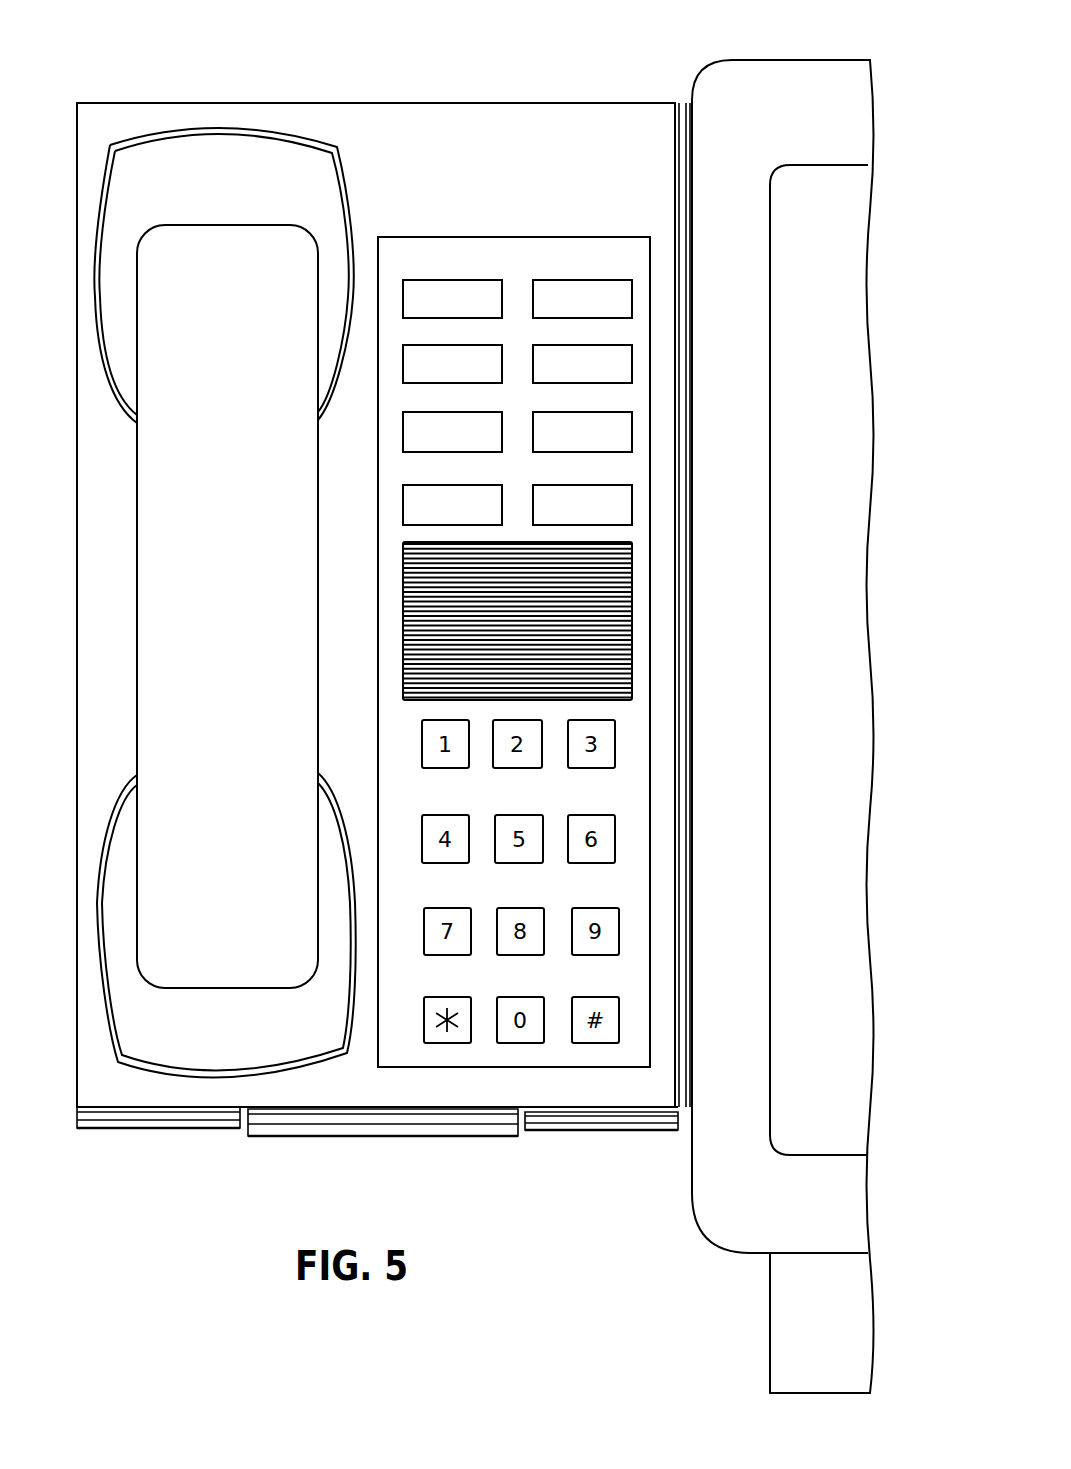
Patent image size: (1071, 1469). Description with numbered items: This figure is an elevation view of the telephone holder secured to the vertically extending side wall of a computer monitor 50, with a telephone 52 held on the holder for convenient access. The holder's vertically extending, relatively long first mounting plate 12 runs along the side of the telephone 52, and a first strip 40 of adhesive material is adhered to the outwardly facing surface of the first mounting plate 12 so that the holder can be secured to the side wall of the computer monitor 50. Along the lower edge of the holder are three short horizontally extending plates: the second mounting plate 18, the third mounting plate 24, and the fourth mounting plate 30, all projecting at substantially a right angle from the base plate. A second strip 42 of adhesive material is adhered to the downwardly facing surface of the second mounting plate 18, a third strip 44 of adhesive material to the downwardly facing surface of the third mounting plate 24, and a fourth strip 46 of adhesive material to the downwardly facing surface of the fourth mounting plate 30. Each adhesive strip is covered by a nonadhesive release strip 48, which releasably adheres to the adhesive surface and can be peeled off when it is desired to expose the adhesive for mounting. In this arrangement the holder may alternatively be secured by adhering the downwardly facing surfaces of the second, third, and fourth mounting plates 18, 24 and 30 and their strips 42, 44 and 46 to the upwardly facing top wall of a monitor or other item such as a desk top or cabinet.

The first mounting plate 12 is at (678, 103).
The second mounting plate 18 is at (560, 1108).
The third mounting plate 24 is at (177, 1113).
The fourth mounting plate 30 is at (377, 1106).
The first strip of adhesive material 40 is at (688, 103).
The second strip of adhesive material 42 is at (606, 1121).
The third strip of adhesive material 44 is at (198, 1122).
The fourth strip of adhesive material 46 is at (405, 1123).
The nonadhesive release strip 48 is at (153, 1135).
The computer monitor 50 is at (727, 1195).
The telephone 52 is at (476, 120).